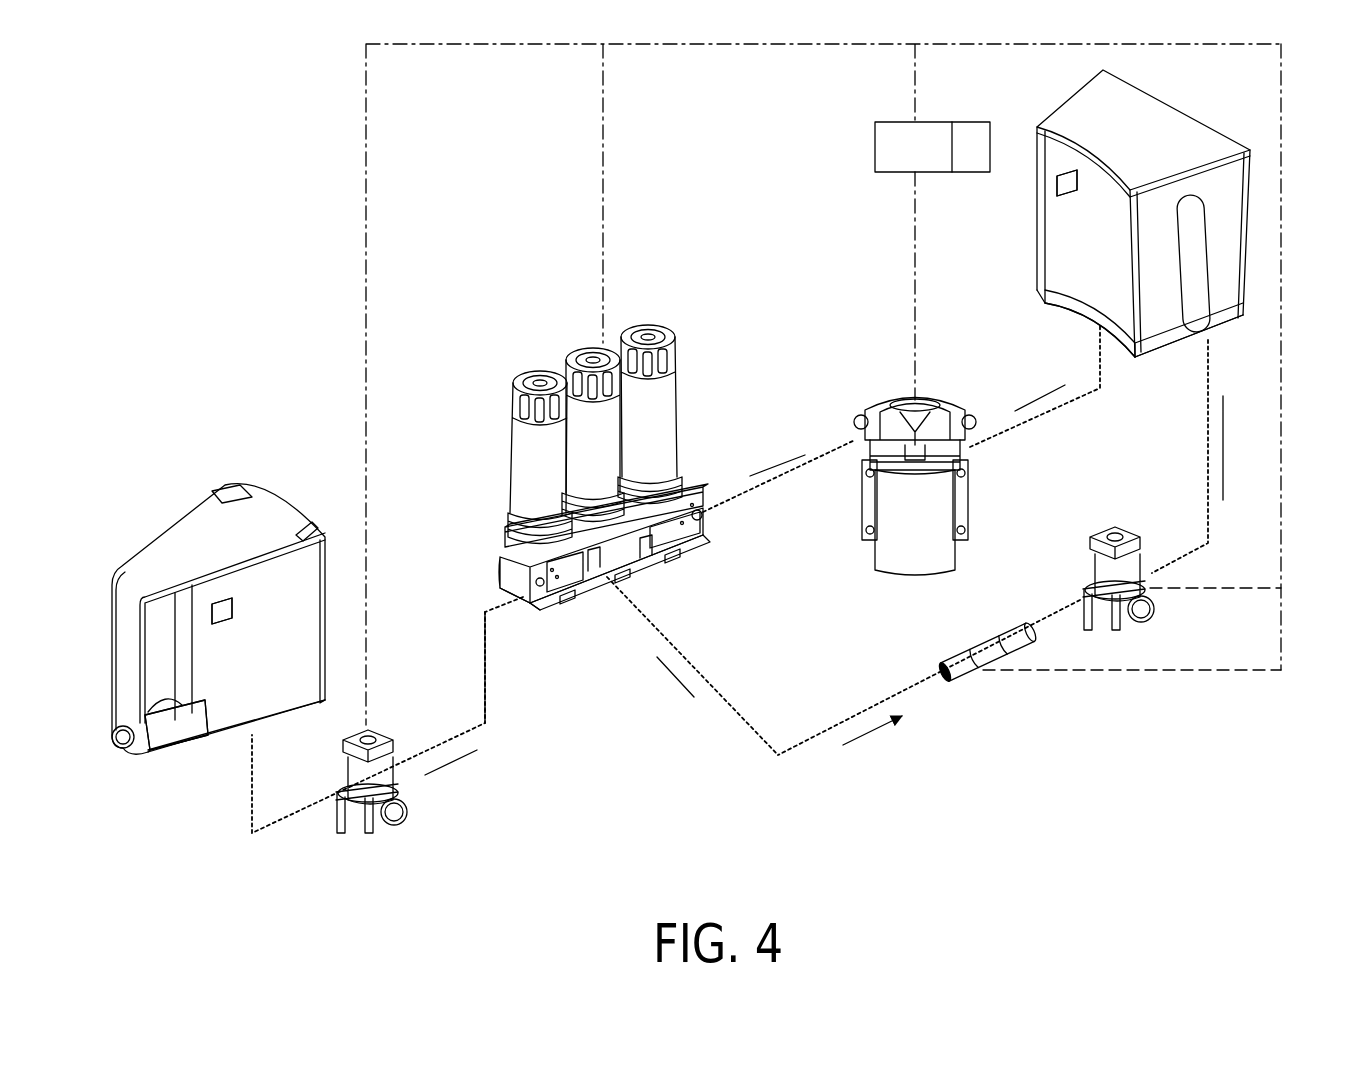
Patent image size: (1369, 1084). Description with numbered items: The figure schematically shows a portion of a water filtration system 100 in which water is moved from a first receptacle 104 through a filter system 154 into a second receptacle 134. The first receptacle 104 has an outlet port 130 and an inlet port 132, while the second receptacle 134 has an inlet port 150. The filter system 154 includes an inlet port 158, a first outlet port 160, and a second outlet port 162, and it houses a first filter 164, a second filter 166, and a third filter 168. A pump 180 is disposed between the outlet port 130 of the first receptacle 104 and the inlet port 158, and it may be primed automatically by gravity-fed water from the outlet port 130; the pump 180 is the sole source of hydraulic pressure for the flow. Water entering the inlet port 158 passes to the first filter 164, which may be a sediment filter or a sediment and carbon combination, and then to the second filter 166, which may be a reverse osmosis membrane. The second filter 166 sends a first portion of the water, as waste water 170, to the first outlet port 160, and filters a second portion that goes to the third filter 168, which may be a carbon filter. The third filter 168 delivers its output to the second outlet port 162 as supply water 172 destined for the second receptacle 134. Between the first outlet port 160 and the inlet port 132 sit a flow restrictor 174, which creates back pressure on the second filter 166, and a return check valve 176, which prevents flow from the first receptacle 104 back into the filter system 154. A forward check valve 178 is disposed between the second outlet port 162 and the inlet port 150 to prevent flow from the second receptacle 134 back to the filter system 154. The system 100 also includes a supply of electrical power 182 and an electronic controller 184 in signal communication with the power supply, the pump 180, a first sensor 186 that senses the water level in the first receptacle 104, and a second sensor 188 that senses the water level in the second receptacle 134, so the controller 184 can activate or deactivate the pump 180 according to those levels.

The water filtration system 100 is at (476, 104).
The first receptacle 104 is at (1230, 222).
The outlet port 130 is at (1082, 318).
The inlet port 132 is at (1222, 335).
The second receptacle 134 is at (305, 613).
The inlet port 150 is at (252, 730).
The filter system 154 is at (596, 463).
The inlet port 158 is at (702, 516).
The first outlet port 160 is at (600, 570).
The second outlet port 162 is at (538, 602).
The first filter 164 is at (660, 323).
The second filter 166 is at (578, 343).
The third filter 168 is at (523, 377).
The waste water 170 is at (677, 650).
The supply water 172 is at (483, 663).
The flow restrictor 174 is at (968, 672).
The return check valve 176 is at (1113, 528).
The forward check valve 178 is at (353, 800).
The pump 180 is at (915, 404).
The supply of electrical power 182 is at (898, 132).
The electronic controller 184 is at (968, 130).
The first sensor 186 is at (1057, 187).
The second sensor 188 is at (212, 607).